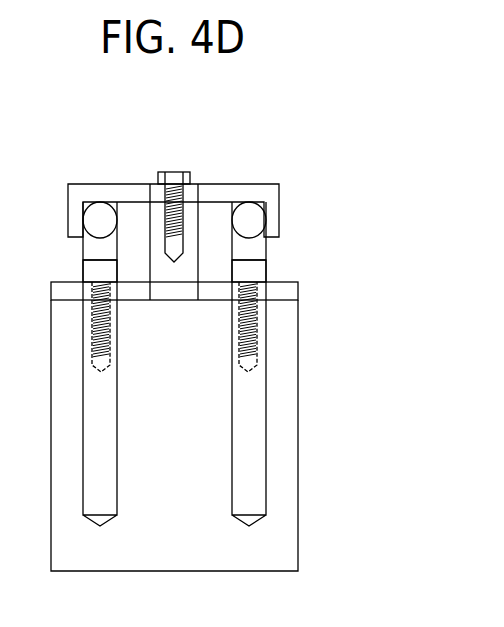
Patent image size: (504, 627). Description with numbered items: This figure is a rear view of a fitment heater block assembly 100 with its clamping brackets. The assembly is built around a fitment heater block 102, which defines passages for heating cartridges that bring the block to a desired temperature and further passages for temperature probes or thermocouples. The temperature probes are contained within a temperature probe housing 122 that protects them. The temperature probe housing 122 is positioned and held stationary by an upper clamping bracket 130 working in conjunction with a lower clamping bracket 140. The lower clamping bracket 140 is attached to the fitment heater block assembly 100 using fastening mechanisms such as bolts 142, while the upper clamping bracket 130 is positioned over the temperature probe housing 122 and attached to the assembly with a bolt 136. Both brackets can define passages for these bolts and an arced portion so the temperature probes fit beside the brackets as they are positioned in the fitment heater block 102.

The fitment heater block assembly 100 is at (336, 366).
The fitment heater block 102 is at (281, 523).
The temperature probe housing 122 is at (255, 248).
The upper clamping bracket 130 is at (275, 197).
The bolt 136 is at (174, 175).
The lower clamping bracket 140 is at (288, 291).
The bolts 142 is at (95, 270).